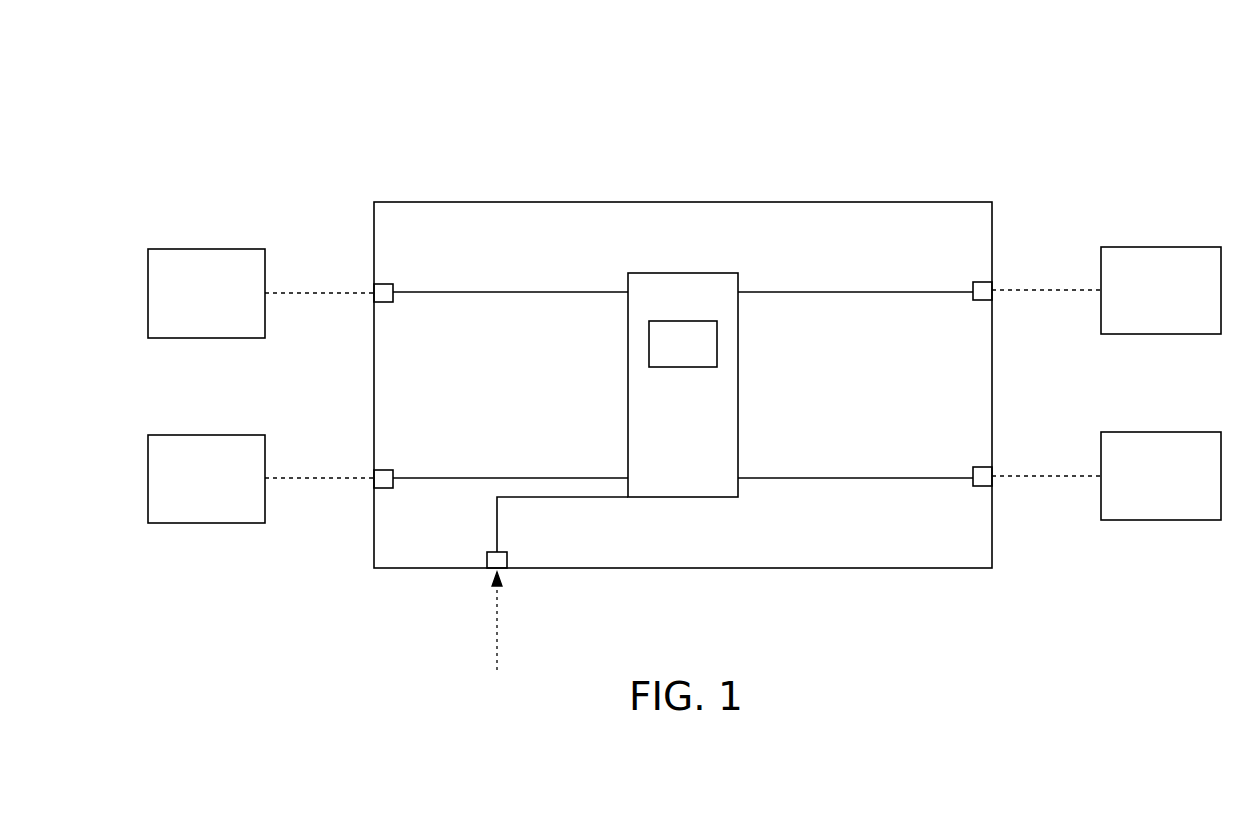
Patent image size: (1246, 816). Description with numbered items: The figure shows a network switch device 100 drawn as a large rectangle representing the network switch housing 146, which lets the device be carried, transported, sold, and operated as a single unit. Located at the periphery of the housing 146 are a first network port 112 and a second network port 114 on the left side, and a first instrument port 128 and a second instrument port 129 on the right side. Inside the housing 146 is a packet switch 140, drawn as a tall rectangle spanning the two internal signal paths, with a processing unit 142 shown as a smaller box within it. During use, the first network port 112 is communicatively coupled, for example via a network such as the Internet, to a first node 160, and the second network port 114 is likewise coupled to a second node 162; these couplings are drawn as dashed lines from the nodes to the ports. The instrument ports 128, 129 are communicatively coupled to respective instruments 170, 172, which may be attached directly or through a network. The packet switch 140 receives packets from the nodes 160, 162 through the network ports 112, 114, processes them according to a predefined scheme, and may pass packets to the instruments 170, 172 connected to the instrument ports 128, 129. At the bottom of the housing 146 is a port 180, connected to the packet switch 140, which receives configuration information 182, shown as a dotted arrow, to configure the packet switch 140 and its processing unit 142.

The network switch device 100 is at (240, 95).
The first network port 112 is at (374, 290).
The second network port 114 is at (374, 480).
The first instrument port 128 is at (980, 282).
The second instrument port 129 is at (978, 487).
The packet switch 140 is at (662, 273).
The processing unit 142 is at (687, 320).
The network switch housing 146 is at (540, 202).
The first node 160 is at (178, 249).
The second node 162 is at (177, 524).
The first instrument 170 is at (1175, 247).
The second instrument 172 is at (1175, 432).
The port 180 is at (493, 572).
The configuration information 182 is at (497, 612).